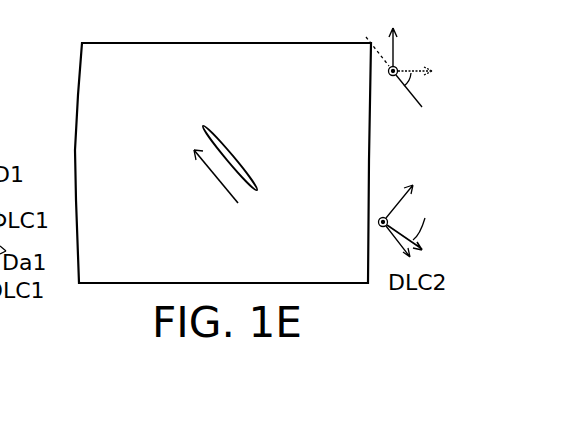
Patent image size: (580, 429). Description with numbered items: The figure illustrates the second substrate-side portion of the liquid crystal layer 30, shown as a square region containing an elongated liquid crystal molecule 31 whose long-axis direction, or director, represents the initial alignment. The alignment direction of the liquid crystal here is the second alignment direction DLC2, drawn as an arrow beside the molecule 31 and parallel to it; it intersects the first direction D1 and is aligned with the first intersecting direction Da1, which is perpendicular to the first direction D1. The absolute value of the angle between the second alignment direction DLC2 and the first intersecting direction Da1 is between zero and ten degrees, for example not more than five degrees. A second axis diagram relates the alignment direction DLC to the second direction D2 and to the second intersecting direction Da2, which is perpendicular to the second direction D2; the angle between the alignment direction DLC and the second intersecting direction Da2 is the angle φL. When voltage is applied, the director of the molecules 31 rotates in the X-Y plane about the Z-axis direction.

The liquid crystal layer 30 is at (110, 62).
The liquid crystal molecules 31 is at (230, 140).
The second alignment direction DLC2 is at (205, 165).
The alignment direction DLC is at (408, 89).
The first direction D1 is at (406, 206).
The second direction D2 is at (411, 33).
The first intersecting direction Da1 is at (427, 230).
The second intersecting direction Da2 is at (433, 61).